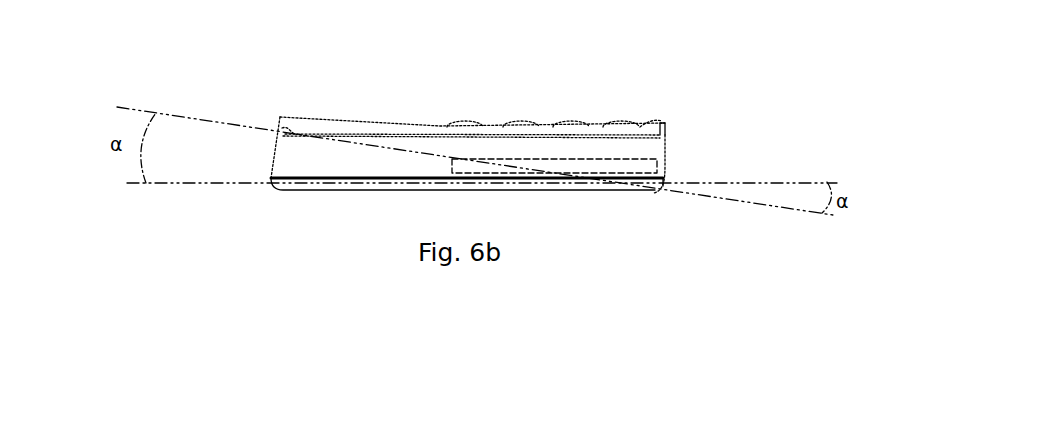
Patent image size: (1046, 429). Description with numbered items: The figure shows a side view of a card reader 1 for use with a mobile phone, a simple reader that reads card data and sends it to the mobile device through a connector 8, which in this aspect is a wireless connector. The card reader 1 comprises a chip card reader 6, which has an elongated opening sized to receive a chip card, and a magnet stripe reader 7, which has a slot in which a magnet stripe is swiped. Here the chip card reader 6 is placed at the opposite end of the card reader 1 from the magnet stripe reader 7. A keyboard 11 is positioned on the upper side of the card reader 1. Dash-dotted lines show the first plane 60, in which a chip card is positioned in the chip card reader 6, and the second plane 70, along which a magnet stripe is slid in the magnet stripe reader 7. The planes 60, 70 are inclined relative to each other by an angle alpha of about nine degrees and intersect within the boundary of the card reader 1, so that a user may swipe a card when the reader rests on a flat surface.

The card reader 1 is at (107, 295).
The chip card reader 6 is at (605, 168).
The magnet stripe reader 7 is at (338, 134).
The connector 8 is at (681, 144).
The keyboard 11 is at (561, 112).
The first plane 60 is at (179, 186).
The second plane 70 is at (232, 121).